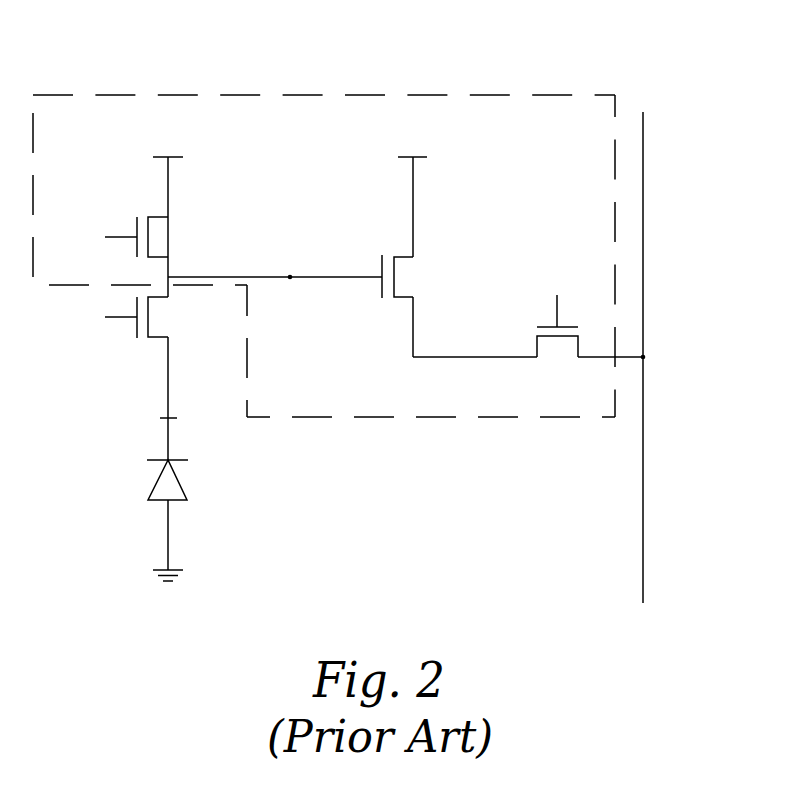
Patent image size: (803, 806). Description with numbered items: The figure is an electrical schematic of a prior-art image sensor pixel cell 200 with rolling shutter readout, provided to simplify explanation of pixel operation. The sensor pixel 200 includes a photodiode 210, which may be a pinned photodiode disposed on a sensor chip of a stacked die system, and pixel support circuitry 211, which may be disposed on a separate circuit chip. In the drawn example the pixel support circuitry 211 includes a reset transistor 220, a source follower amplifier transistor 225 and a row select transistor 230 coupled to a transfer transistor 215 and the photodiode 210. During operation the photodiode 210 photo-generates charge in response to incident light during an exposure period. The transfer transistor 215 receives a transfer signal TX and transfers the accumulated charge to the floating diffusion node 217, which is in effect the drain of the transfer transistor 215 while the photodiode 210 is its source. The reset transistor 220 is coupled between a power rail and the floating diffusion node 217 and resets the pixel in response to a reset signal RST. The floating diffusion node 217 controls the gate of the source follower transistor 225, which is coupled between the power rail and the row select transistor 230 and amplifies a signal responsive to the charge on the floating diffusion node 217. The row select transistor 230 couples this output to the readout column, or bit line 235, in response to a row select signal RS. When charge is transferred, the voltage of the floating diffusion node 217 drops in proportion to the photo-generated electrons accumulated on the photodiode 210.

The image sensor pixel cell 200 is at (694, 61).
The photodiode 210 is at (138, 520).
The pixel support circuitry 211 is at (100, 134).
The transfer transistor 215 is at (136, 378).
The floating diffusion node 217 is at (290, 279).
The reset transistor 220 is at (132, 257).
The source follower amplifier transistor 225 is at (459, 295).
The row select transistor 230 is at (587, 329).
The bit line 235 is at (643, 514).